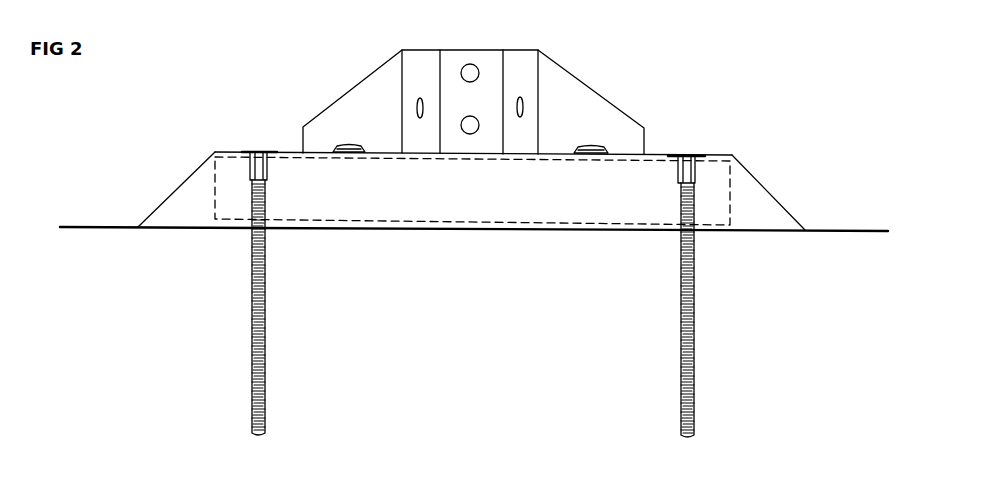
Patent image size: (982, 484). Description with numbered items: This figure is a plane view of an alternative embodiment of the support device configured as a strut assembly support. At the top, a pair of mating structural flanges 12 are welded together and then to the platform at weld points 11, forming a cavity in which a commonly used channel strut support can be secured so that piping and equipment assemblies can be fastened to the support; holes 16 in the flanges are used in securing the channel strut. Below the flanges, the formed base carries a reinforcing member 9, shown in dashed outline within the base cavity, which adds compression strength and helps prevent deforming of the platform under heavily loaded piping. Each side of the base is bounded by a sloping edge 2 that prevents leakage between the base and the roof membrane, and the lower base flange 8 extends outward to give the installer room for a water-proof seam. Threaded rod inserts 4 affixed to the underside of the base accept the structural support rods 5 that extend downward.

The sloping edge 2 is at (757, 197).
The threaded rod insert 4 is at (267, 163).
The structural support rod 5 is at (266, 357).
The lower base flange 8 is at (848, 233).
The reinforcing member 9 is at (230, 185).
The weld point 11 is at (413, 106).
The mating structural flange 12 is at (560, 103).
The hole 16 is at (461, 116).